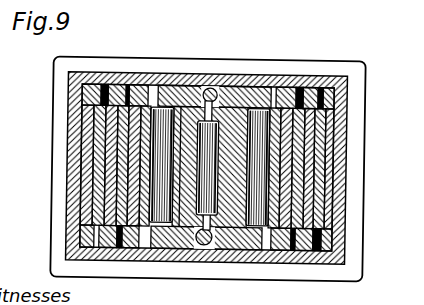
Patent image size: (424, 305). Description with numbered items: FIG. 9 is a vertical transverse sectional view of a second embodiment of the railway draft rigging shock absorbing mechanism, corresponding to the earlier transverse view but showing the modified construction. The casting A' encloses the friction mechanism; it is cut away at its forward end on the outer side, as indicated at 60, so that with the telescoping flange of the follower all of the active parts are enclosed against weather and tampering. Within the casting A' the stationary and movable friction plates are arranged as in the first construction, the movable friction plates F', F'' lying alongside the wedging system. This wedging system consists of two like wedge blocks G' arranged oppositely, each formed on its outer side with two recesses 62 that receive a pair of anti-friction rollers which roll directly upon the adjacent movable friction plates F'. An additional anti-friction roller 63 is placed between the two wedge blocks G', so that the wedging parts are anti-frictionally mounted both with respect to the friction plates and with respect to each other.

The cut away portion of casting 60 is at (201, 75).
The recesses 62 is at (254, 100).
The anti-friction roller 63 is at (207, 165).
The casting A' is at (207, 148).
The movable friction plates F' is at (84, 165).
The right laminated columns F'' is at (332, 168).
The wedge blocks G' is at (207, 195).